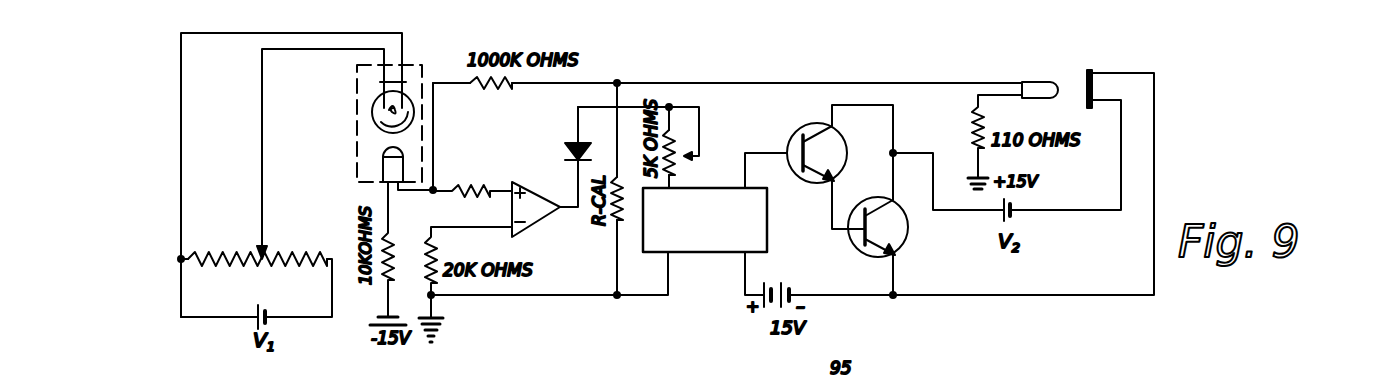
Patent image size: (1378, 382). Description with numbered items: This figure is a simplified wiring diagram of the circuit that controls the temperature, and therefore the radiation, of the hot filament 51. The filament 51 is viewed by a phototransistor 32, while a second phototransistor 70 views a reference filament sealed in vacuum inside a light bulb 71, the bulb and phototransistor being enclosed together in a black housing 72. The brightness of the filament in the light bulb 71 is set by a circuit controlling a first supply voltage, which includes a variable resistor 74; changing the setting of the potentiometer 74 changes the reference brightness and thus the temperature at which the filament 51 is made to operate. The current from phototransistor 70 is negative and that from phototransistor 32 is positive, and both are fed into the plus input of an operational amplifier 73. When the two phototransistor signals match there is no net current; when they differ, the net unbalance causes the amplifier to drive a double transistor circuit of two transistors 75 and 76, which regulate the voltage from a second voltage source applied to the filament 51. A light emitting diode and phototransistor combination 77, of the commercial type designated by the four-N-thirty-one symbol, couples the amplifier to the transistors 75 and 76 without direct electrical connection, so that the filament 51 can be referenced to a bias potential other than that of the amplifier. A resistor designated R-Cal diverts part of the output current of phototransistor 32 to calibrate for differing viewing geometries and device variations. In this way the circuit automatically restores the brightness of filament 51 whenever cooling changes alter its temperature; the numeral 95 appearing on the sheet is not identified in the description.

The second phototransistor 70 is at (383, 162).
The light bulb 71 is at (372, 106).
The black housing 72 is at (357, 123).
The operational amplifier 73 is at (540, 202).
The variable resistor 74 is at (328, 256).
The transistor 75 is at (846, 156).
The transistor 76 is at (898, 248).
The light emitting diode and phototransistor combination 77 is at (701, 257).
The phototransistor 32 is at (1041, 82).
The filament 51 is at (1088, 70).
The circuit 95 is at (854, 374).